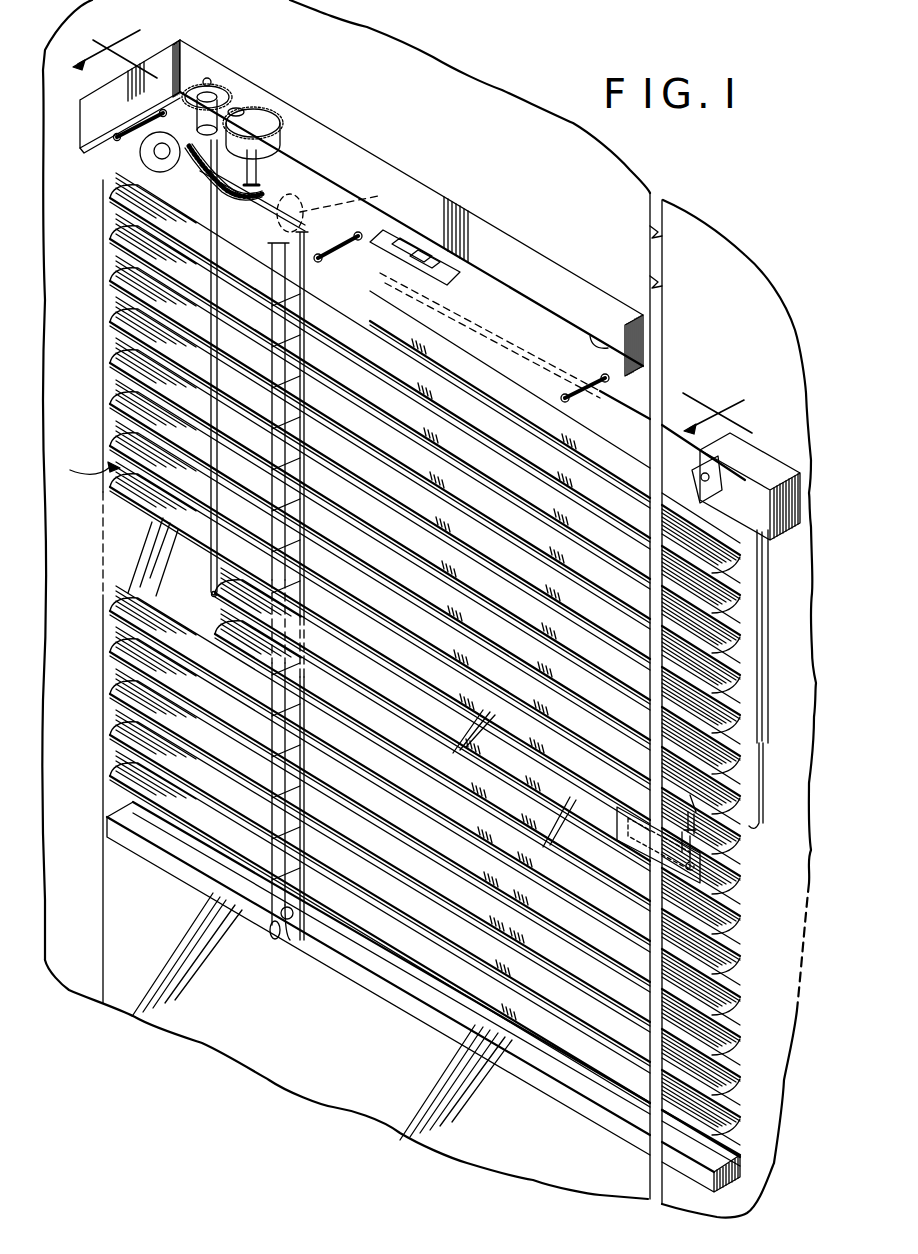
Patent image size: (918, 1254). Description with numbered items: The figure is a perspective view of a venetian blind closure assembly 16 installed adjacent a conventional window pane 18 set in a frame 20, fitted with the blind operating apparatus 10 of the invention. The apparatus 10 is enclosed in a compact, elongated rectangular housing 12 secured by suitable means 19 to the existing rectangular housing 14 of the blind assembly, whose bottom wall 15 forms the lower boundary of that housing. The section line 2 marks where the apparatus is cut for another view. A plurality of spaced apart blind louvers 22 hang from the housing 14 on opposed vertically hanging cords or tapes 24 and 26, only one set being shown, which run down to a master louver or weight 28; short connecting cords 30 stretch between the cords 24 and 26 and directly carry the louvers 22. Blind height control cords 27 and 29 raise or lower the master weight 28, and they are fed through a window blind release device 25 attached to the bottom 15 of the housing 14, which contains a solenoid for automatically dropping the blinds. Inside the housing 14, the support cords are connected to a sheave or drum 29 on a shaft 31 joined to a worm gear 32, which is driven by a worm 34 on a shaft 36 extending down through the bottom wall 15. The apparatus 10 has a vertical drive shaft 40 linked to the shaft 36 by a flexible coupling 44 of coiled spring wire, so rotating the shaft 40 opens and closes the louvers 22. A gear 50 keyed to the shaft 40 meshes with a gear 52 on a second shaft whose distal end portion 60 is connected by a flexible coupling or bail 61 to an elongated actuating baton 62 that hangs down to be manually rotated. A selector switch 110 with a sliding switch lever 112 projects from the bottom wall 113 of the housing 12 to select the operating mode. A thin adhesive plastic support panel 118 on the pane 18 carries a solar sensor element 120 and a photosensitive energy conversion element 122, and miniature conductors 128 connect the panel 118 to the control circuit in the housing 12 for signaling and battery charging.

The section line 2- 2 is at (418, 224).
The blind operating apparatus 10 is at (440, 192).
The housing 12 is at (567, 270).
The housing 14 is at (90, 90).
The bottom wall 15 is at (88, 157).
The window blind closure assembly 16 is at (82, 457).
The window pane 18 is at (525, 1143).
The securing means 19 is at (133, 130).
The frame 20 is at (82, 967).
The blind louvers 22 is at (398, 803).
The hanging cord 24 is at (306, 693).
The window blind release device 25 is at (748, 500).
The hanging cord 26 is at (270, 603).
The blind height control cord 27 is at (770, 715).
The master weight 28 is at (395, 988).
The blind height control cord 29 is at (777, 790).
The connecting cords 30 is at (302, 508).
The shaft 31 is at (143, 158).
The worm gear 32 is at (168, 55).
The worm 34 is at (208, 76).
The shaft 36 is at (165, 172).
The drive shaft 40 is at (275, 152).
The flexible coupling 44 is at (305, 178).
The gear 50 is at (272, 118).
The gear 52 is at (228, 96).
The distal end portion 60 is at (243, 110).
The flexible coupling 61 is at (200, 195).
The actuating baton 62 is at (210, 573).
The selector switch 110 is at (482, 262).
The sliding switch lever 112 is at (455, 232).
The bottom wall 113 is at (603, 345).
The support panel 118 is at (616, 826).
The sensor element 120 is at (715, 875).
The photosensitive energy conversion element 122 is at (640, 852).
The miniature conductors 128 is at (695, 818).